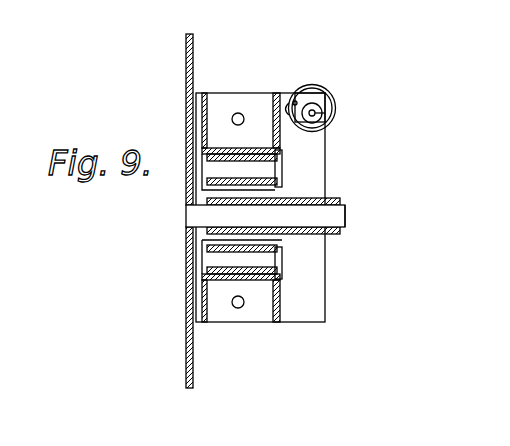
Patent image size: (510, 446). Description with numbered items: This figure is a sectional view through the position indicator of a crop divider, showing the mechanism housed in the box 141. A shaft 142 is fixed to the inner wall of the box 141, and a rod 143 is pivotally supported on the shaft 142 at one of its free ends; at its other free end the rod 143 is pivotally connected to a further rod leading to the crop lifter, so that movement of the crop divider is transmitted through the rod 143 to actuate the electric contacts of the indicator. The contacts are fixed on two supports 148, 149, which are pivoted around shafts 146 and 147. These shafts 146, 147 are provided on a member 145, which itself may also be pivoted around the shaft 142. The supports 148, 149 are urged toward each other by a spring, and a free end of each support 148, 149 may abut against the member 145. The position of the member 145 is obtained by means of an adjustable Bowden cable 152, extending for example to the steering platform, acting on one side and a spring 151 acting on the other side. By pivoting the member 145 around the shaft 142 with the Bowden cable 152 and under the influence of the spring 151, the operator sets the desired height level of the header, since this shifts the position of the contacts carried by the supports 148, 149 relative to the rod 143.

The box 141 is at (186, 50).
The shaft 142 is at (345, 217).
The rod 143 is at (338, 199).
The member 145 is at (186, 238).
The shaft 146 is at (257, 196).
The shaft 147 is at (267, 244).
The support 148 is at (250, 152).
The support 149 is at (258, 282).
The spring 151 is at (308, 86).
The adjustable Bowden cable 152 is at (325, 113).